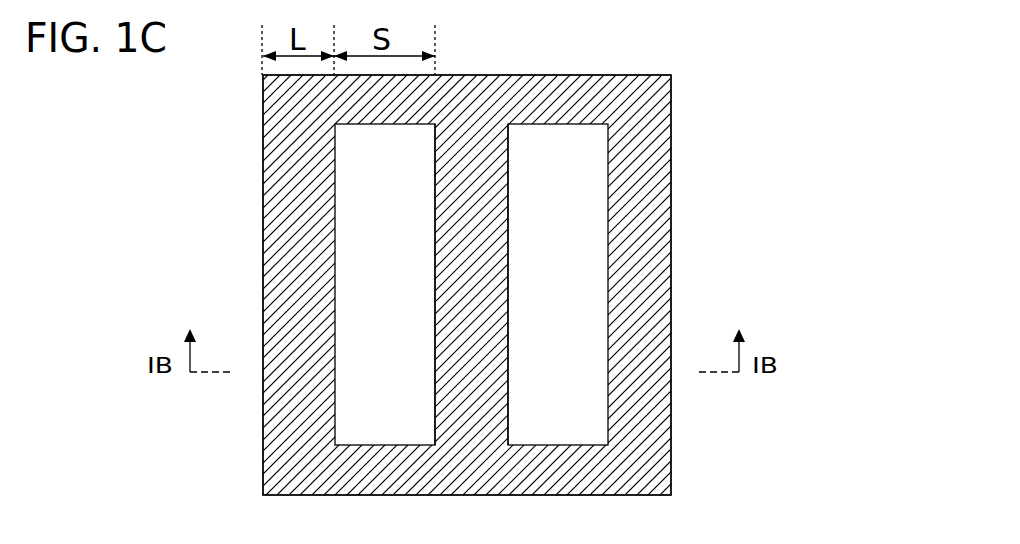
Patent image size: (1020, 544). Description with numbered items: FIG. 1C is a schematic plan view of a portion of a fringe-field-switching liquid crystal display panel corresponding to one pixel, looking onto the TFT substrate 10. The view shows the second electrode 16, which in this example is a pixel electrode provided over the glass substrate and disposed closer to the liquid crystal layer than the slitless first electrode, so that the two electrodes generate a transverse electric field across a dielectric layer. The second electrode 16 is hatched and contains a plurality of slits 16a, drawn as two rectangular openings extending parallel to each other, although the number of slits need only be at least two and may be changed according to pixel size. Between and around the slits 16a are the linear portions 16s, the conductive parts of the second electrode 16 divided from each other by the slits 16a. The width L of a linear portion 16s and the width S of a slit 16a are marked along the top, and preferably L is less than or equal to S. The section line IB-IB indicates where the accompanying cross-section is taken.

The TFT substrate 10 is at (842, 90).
The second electrode 16 is at (660, 282).
The slits 16a is at (593, 197).
The linear portions 16s is at (483, 280).